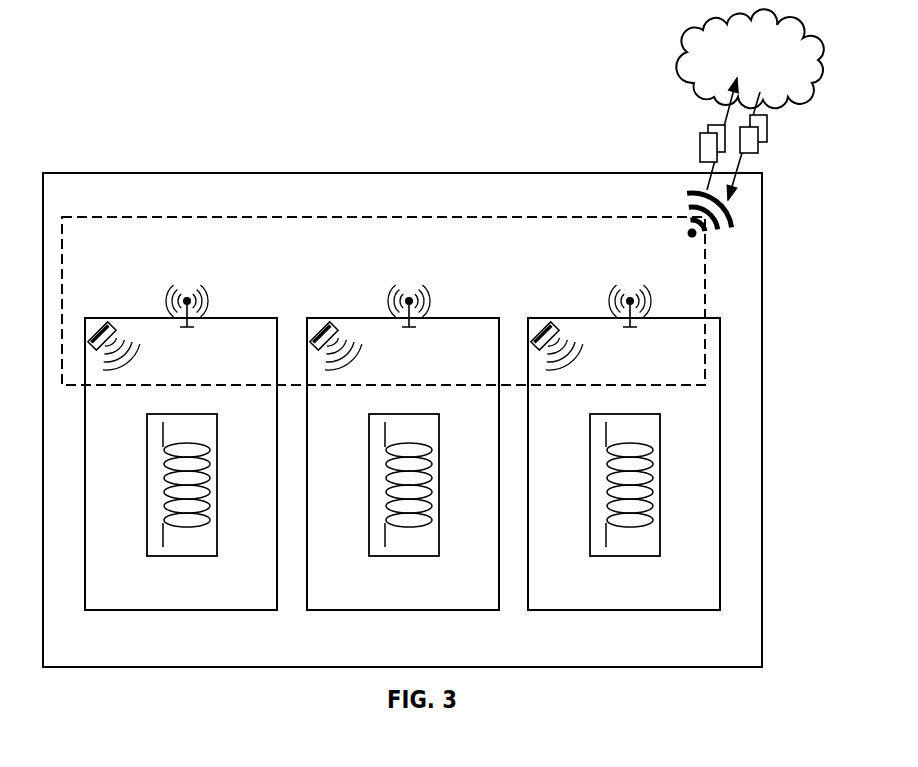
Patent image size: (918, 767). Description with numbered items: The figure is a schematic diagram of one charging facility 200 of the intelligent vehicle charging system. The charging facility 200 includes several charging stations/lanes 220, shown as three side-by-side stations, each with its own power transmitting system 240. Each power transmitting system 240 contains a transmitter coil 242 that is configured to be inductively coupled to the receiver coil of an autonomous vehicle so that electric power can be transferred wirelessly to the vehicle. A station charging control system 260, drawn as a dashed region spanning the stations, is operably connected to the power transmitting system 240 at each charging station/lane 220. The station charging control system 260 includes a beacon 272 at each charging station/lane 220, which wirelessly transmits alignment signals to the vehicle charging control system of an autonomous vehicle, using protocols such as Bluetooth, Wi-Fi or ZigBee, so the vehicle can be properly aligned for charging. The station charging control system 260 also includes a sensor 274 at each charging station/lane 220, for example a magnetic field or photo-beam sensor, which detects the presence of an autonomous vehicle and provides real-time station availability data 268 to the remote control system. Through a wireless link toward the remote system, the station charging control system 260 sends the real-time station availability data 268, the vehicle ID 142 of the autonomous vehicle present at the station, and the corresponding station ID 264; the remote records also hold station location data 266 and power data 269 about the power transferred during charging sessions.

The charging facility 200 is at (90, 173).
The station charging control system 260 is at (403, 249).
The charging station/lane 220 is at (125, 612).
The power transmitting system 240 is at (208, 542).
The transmitter coil 242 is at (213, 473).
The beacon 272 is at (209, 302).
The sensor 274 is at (103, 323).
The vehicle ID 142 is at (700, 148).
The station ID 264 is at (760, 124).
The station location data 266 is at (760, 124).
The real-time station availability data 268 is at (760, 124).
The power data 269 is at (767, 133).